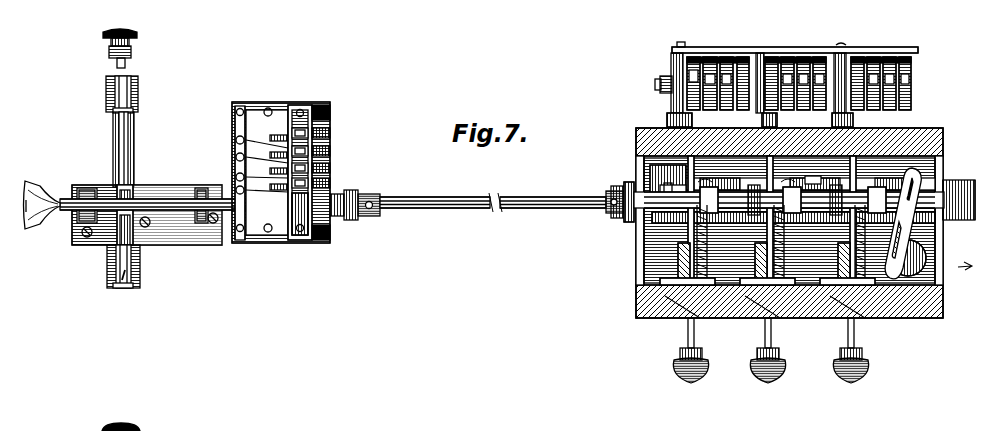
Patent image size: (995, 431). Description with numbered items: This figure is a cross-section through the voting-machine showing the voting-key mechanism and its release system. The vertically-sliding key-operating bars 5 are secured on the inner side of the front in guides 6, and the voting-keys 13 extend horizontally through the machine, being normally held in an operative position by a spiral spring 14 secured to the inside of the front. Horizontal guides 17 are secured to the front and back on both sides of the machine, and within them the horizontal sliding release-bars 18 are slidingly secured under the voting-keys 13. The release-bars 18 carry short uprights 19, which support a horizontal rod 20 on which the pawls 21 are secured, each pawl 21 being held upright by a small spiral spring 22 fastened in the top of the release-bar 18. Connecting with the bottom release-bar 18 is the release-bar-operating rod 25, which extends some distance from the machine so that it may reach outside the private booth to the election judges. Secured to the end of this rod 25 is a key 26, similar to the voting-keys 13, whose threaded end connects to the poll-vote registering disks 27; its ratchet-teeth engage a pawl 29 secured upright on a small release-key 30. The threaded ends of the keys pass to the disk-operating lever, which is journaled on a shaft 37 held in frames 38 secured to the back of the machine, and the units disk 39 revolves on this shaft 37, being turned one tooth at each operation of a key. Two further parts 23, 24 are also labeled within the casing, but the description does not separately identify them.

The vertically-sliding key-operating bar 5 is at (640, 318).
The guide 6 is at (645, 290).
The voting-key 13 is at (688, 333).
The spiral spring 14 is at (888, 305).
The horizontal guide 17 is at (637, 168).
The horizontal sliding release-bar 18 is at (968, 195).
The short upright 19 is at (646, 220).
The horizontal rod 20 is at (652, 238).
The pawl 21 is at (660, 255).
The small spiral spring 22 is at (948, 212).
The lever pivot 23 is at (938, 238).
The collar 24 is at (839, 181).
The release-bar-operating rod 25 is at (520, 196).
The release-bar-operating key 26 is at (232, 210).
The poll-vote registering disk 27 is at (320, 172).
The pawl 29 is at (128, 193).
The release-key 30 is at (124, 160).
The shaft 37 is at (660, 84).
The frame 38 is at (678, 98).
The units disk 39 is at (710, 62).